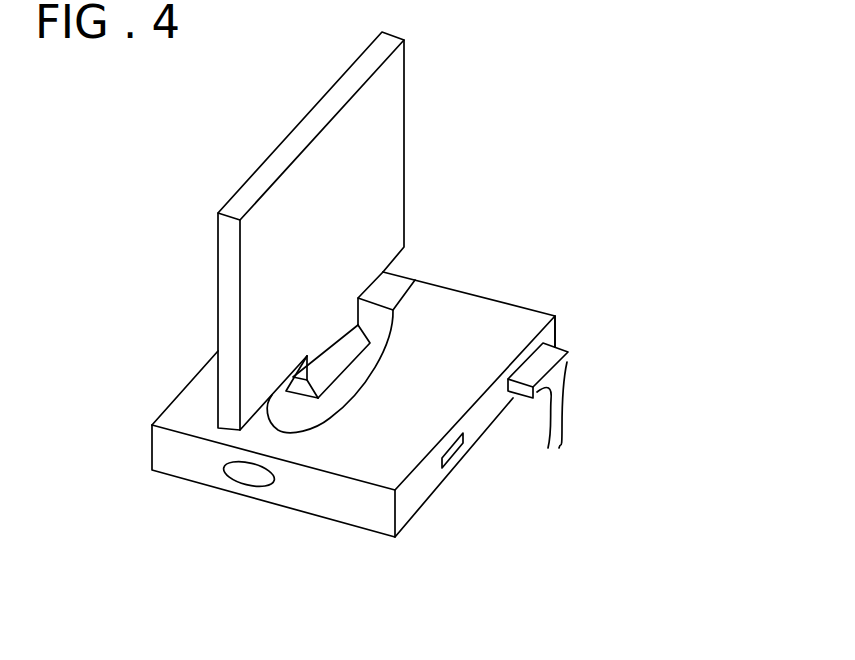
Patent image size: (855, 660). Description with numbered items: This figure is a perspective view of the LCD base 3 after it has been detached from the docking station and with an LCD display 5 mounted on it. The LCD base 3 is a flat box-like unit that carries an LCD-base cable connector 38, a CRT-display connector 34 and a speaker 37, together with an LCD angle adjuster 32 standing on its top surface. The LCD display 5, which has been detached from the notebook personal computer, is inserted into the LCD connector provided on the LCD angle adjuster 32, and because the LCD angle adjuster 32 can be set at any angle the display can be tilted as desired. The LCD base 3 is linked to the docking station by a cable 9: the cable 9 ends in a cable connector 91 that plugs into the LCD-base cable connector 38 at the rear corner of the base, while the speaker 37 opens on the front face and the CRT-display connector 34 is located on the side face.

The LCD base 3 is at (308, 514).
The LCD display 5 is at (387, 138).
The LCD angle adjuster 32 is at (406, 287).
The CRT-display connector 34 is at (449, 455).
The speaker 37 is at (248, 475).
The LCD-base cable connector 38 is at (556, 320).
The cable connector 91 is at (568, 353).
The cable 9 is at (565, 411).